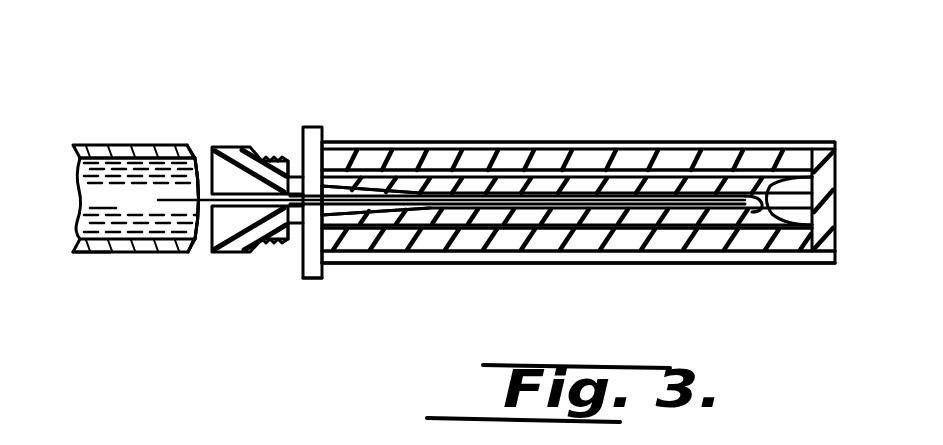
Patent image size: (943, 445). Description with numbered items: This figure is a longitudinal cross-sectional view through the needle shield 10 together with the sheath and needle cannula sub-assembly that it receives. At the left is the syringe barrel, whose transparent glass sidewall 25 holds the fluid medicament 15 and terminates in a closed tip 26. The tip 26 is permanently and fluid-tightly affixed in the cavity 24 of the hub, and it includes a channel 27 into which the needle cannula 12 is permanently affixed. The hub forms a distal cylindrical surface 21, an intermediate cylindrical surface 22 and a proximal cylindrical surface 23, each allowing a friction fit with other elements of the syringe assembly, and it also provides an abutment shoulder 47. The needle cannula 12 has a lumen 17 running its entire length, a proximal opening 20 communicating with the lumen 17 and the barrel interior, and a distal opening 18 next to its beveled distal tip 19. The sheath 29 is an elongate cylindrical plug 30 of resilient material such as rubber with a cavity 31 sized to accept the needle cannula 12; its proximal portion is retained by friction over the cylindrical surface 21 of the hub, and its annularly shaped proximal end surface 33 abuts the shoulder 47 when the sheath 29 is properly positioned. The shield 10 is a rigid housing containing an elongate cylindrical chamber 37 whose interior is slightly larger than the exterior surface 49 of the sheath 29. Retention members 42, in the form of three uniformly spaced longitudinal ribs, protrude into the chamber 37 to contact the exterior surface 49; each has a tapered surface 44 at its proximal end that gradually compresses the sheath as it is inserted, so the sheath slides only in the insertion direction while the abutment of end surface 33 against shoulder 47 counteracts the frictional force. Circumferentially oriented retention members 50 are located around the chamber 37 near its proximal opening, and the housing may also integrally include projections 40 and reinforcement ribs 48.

The needle shield 10 is at (604, 114).
The needle cannula 12 is at (576, 229).
The fluid medicament 15 is at (103, 198).
The lumen 17 is at (508, 226).
The distal opening 18 is at (704, 255).
The beveled distal tip 19 is at (746, 214).
The proximal opening 20 is at (158, 203).
The distal cylindrical surface 21 is at (296, 236).
The intermediate cylindrical surface 22 is at (266, 158).
The proximal cylindrical surface 23 is at (230, 147).
The cavity 24 is at (225, 253).
The glass sidewall 25 is at (92, 254).
The closed tip 26 is at (203, 232).
The channel 27 is at (198, 145).
The sheath 29 is at (634, 237).
The elongate cylindrical plug 30 is at (618, 160).
The cavity 31 is at (388, 190).
The annularly shaped proximal end surface 33 is at (306, 127).
The chamber 37 is at (526, 175).
The projections 40 is at (340, 158).
The retention member 42 is at (430, 227).
The tapered surface 44 is at (312, 280).
The abutment shoulder 47 is at (278, 246).
The reinforcement ribs 48 is at (774, 144).
The exterior surface 49 is at (704, 172).
The circumferentially oriented retention members 50 is at (342, 170).